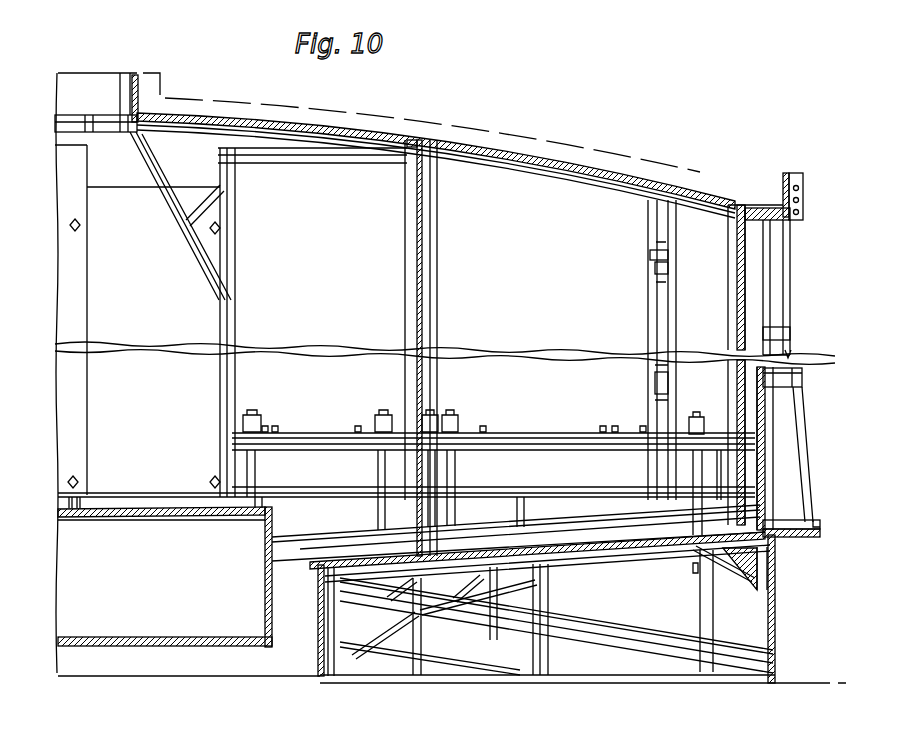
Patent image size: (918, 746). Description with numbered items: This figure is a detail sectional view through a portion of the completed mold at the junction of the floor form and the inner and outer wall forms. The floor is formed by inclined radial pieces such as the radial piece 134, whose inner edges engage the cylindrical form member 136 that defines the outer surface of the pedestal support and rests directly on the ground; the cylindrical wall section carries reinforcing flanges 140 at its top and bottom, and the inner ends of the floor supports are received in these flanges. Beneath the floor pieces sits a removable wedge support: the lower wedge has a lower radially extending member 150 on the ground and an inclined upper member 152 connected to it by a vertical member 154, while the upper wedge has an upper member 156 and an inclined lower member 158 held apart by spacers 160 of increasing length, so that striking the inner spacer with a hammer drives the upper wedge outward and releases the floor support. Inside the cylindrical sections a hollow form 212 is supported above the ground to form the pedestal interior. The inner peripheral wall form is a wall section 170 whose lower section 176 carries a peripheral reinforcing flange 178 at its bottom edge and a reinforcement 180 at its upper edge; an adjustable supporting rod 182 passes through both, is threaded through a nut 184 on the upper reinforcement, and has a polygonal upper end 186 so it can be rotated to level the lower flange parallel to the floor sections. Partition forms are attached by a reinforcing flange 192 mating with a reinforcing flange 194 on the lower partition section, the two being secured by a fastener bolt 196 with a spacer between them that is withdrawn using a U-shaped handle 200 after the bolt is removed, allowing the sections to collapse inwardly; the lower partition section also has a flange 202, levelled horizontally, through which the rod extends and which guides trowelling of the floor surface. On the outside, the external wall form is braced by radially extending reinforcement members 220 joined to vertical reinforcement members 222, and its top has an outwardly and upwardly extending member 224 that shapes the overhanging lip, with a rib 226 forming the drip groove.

The radial piece 134 is at (620, 551).
The cylindrical form member 136 is at (317, 635).
The reinforcing flange 140 is at (335, 680).
The lower radially extending member 150 is at (582, 682).
The inclined upper member 152 is at (690, 660).
The vertical member 154 is at (360, 668).
The upper member 156 is at (670, 546).
The inclined lower member 158 is at (665, 643).
The spacer 160 is at (763, 620).
The peripheral wall section 170 is at (747, 228).
The lower section 176 is at (747, 463).
The peripheral reinforcing flange 178 is at (747, 503).
The reinforcement 180 is at (730, 437).
The adjustable supporting rod 182 is at (380, 468).
The nut 184 is at (690, 458).
The polygonal upper end 186 is at (377, 420).
The reinforcing flange 192 is at (540, 436).
The reinforcing flange 194 is at (573, 447).
The fastener bolt 196 is at (650, 257).
The U-shaped handle 200 is at (660, 265).
The flange 202 is at (600, 502).
The hollow form 212 is at (177, 637).
The reinforcement member 220 is at (787, 538).
The vertical reinforcement member 222 is at (787, 315).
The outwardly and upwardly extending member 224 is at (800, 172).
The rib 226 is at (771, 212).